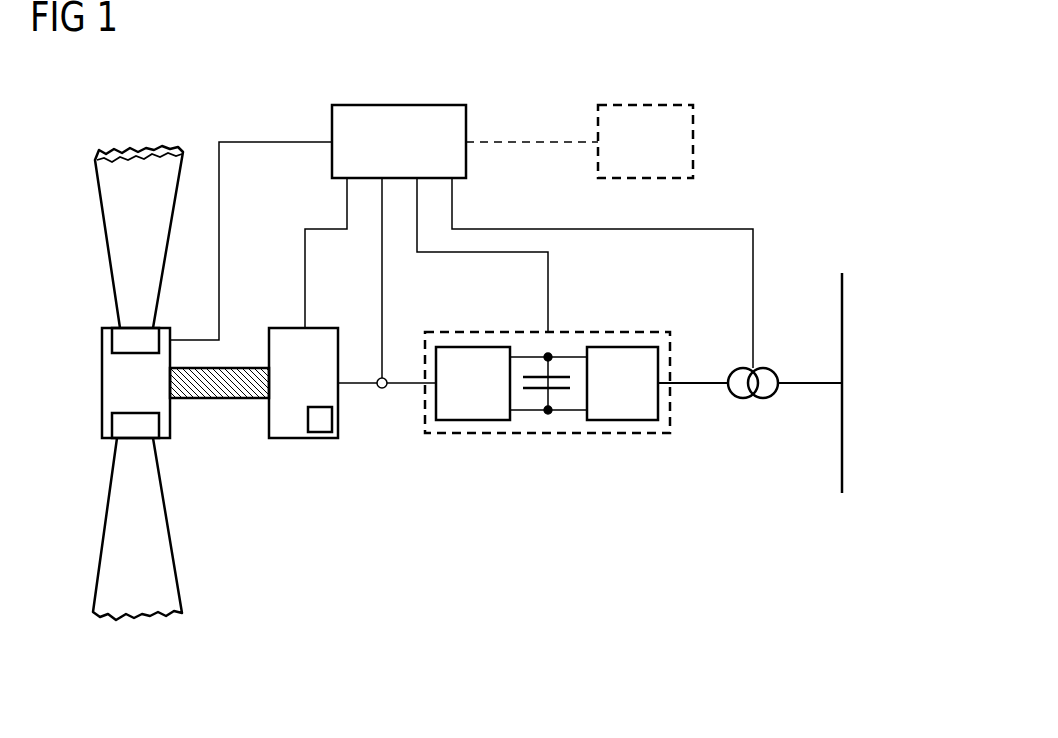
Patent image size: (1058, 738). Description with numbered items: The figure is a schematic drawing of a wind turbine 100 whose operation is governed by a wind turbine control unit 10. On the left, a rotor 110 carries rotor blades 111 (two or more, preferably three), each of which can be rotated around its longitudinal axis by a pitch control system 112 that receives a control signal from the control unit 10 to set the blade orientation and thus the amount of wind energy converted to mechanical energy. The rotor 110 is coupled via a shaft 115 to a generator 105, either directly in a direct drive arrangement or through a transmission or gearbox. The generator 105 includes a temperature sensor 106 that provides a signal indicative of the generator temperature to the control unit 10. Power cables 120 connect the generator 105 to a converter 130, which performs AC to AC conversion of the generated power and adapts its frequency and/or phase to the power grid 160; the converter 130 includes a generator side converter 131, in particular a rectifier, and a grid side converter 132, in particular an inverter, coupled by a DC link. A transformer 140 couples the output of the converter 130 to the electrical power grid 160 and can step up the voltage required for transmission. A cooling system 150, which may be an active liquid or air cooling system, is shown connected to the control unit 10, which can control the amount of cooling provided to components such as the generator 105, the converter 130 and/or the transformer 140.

The wind turbine control unit 10 is at (398, 105).
The wind turbine 100 is at (772, 112).
The generator 105 is at (305, 440).
The temperature sensor 106 is at (320, 406).
The rotor 110 is at (104, 383).
The rotor blade 111 is at (105, 240).
The pitch control system 112 is at (113, 335).
The shaft 115 is at (218, 398).
The power cables 120 is at (363, 388).
The converter 130 is at (540, 435).
The generator side converter 131 is at (472, 347).
The grid side converter 132 is at (622, 347).
The transformer 140 is at (745, 398).
The cooling system 150 is at (652, 105).
The power grid 160 is at (842, 298).